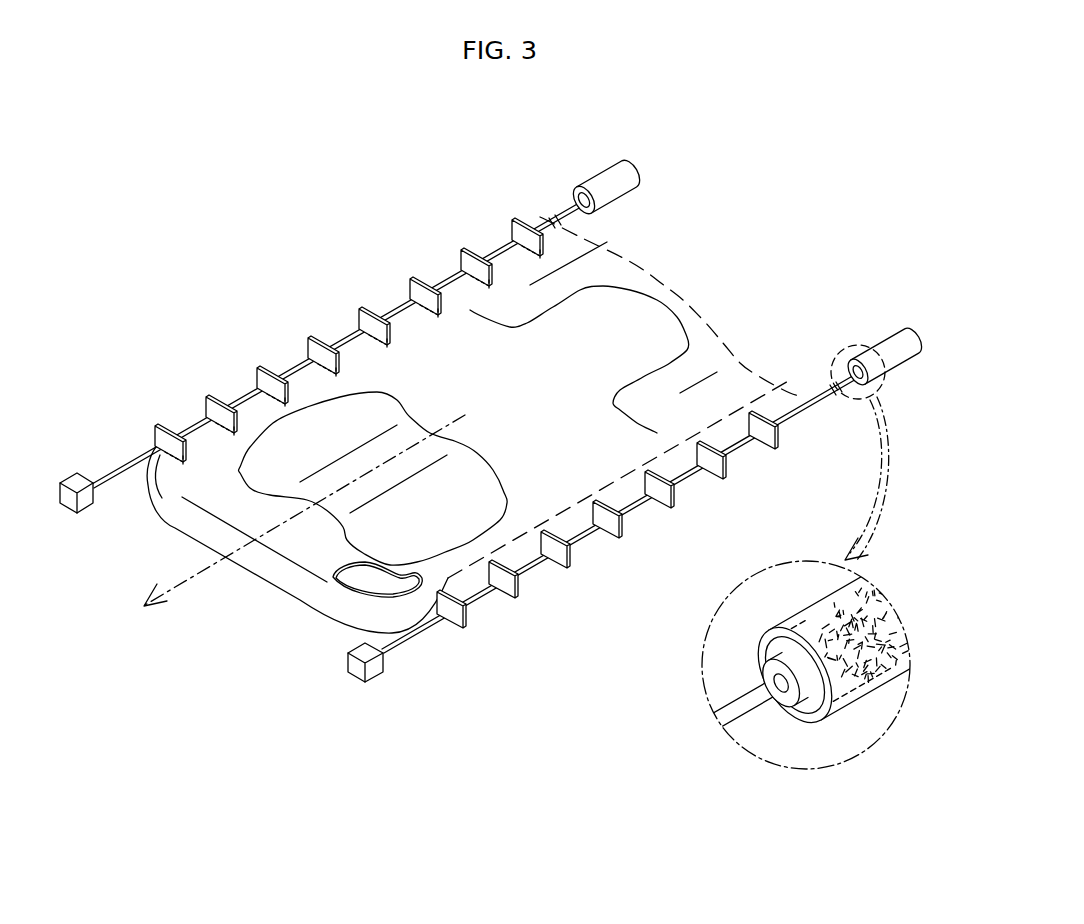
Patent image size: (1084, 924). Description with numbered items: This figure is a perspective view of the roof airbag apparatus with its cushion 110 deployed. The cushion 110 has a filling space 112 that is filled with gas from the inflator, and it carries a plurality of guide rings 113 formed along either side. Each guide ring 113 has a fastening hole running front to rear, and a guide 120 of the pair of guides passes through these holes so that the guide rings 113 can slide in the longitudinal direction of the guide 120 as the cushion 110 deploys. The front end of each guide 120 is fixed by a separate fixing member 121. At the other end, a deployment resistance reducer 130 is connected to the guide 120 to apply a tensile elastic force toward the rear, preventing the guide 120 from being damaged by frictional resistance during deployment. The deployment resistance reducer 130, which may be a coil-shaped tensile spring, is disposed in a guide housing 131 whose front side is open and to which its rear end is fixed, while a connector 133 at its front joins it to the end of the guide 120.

The cushion 110 is at (703, 353).
The filling space 112 is at (368, 577).
The guide rings 113 is at (468, 258).
The guide 120 is at (340, 340).
The fixing member 121 is at (366, 676).
The deployment resistance reducer 130 is at (900, 346).
The guide housing 131 is at (606, 176).
The connector 133 is at (805, 707).